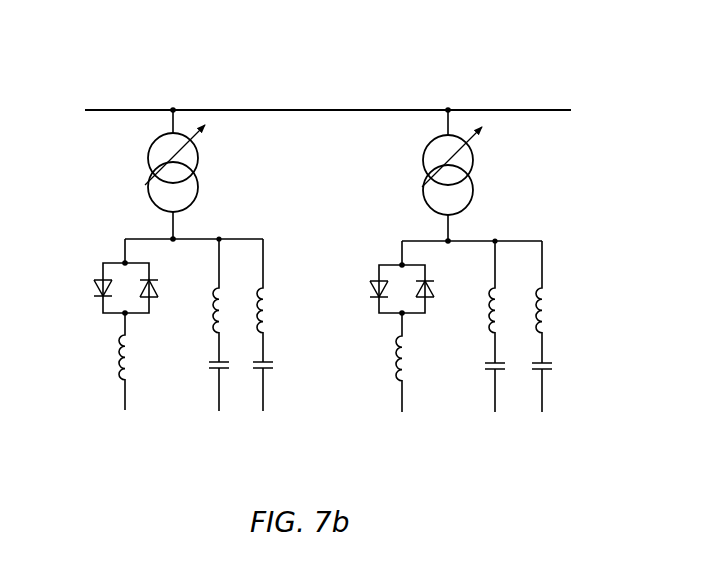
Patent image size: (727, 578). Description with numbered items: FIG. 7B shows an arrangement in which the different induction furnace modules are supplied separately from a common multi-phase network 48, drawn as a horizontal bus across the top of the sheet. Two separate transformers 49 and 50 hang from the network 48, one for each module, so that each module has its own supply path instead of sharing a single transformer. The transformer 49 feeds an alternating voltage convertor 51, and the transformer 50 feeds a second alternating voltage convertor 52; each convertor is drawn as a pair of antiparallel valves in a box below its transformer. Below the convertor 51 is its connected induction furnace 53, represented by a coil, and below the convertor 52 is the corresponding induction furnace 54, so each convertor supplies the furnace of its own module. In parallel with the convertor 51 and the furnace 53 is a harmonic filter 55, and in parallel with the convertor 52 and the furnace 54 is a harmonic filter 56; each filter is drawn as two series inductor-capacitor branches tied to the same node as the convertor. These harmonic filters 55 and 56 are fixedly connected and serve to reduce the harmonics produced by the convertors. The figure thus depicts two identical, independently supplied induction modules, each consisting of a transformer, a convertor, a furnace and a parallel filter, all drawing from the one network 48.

The multi-phase network 48 is at (313, 110).
The transformer 49 is at (197, 176).
The transformer 50 is at (473, 182).
The alternating voltage convertor 51 is at (91, 309).
The alternating voltage convertor 52 is at (363, 314).
The induction furnace 53 is at (116, 360).
The induction furnace 54 is at (390, 368).
The harmonic filter 55 is at (278, 278).
The harmonic filter 56 is at (550, 283).